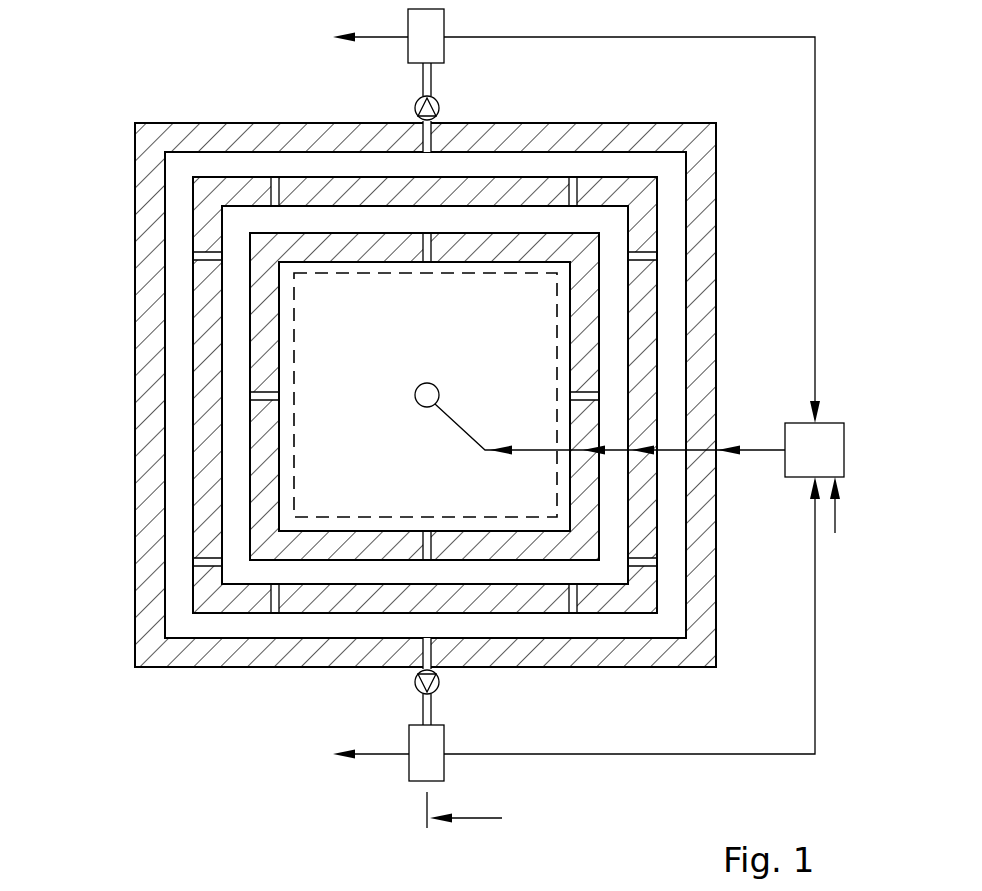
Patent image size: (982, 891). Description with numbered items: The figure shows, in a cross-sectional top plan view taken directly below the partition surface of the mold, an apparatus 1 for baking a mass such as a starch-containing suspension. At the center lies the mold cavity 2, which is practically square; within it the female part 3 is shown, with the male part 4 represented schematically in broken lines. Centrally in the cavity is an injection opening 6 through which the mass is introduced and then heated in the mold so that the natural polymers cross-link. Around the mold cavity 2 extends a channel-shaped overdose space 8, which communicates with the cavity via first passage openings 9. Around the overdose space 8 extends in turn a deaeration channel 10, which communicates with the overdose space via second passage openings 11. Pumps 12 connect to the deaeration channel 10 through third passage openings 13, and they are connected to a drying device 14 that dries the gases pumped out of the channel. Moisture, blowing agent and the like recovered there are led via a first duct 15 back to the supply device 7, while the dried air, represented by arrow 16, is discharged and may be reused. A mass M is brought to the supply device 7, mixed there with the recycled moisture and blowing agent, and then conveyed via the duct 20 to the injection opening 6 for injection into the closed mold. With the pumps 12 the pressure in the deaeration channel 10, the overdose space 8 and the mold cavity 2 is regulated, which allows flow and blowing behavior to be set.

The apparatus 1 is at (132, 120).
The mold cavity 2 is at (359, 371).
The female part 3 is at (563, 332).
The male part 4 is at (414, 273).
The injection opening 6 is at (417, 404).
The supply device 7 is at (844, 450).
The overdose space 8 is at (235, 443).
The first passage openings 9 is at (250, 393).
The deaeration channel 10 is at (180, 325).
The second passage openings 11 is at (200, 562).
The pumps 12 is at (438, 100).
The third passage openings 13 is at (430, 655).
The drying device 14 is at (419, 765).
The first duct 15 is at (643, 36).
The dried air 16 is at (382, 36).
The duct 20 is at (763, 450).
The mass M is at (835, 524).